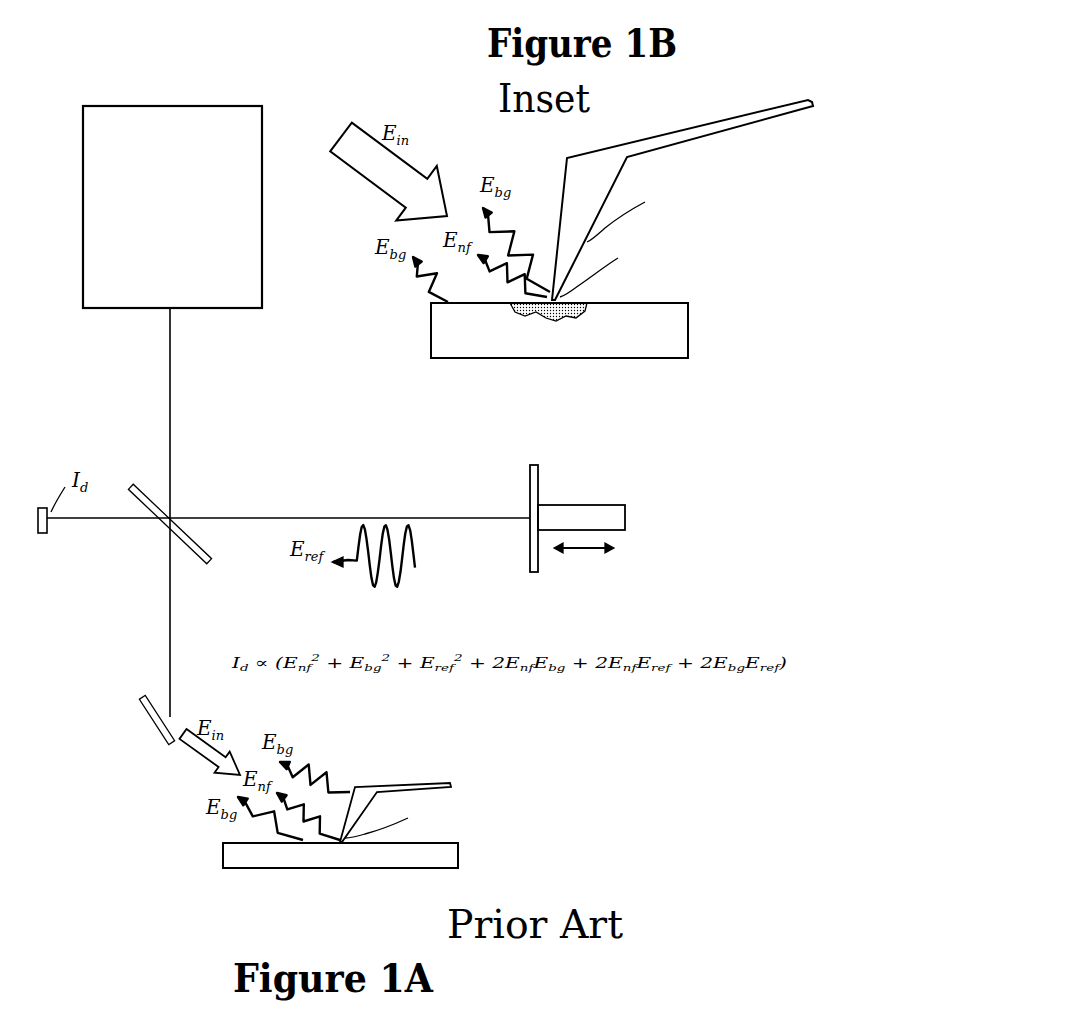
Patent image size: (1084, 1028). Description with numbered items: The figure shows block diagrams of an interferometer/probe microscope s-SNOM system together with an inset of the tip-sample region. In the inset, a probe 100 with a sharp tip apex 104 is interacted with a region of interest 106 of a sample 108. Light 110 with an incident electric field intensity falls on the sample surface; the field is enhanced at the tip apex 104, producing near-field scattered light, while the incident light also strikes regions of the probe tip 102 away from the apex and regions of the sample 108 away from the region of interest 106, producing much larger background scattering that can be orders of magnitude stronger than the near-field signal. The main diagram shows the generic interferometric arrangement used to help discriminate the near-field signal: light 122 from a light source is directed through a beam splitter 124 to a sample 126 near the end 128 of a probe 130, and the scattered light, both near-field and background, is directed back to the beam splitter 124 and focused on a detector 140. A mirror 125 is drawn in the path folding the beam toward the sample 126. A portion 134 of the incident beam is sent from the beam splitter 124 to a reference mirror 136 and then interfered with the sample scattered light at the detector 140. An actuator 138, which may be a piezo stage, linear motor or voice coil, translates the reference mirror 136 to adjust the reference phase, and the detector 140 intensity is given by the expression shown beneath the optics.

In FIG. 1B, the probe 100 is at (682, 200).
In FIG. 1A, the probe 100 is at (172, 207).
In FIG. 1B, the probe tip 102 is at (633, 216).
In FIG. 1B, the tip apex 104 is at (606, 273).
In FIG. 1B, the region of interest 106 is at (560, 318).
In FIG. 1B, the sample 108 is at (580, 330).
In FIG. 1B, the light 110 is at (376, 172).
In FIG. 1A, the light 122 is at (190, 512).
In FIG. 1A, the beam splitter 124 is at (165, 515).
In FIG. 1A, the mirror 125 is at (140, 687).
In FIG. 1A, the sample 126 is at (258, 870).
In FIG. 1A, the end of probe 128 is at (394, 823).
In FIG. 1A, the probe 130 is at (395, 802).
In FIG. 1A, the portion of the incident beam 134 is at (373, 543).
In FIG. 1A, the reference mirror 136 is at (537, 508).
In FIG. 1A, the actuator 138 is at (581, 520).
In FIG. 1A, the detector 140 is at (269, 520).